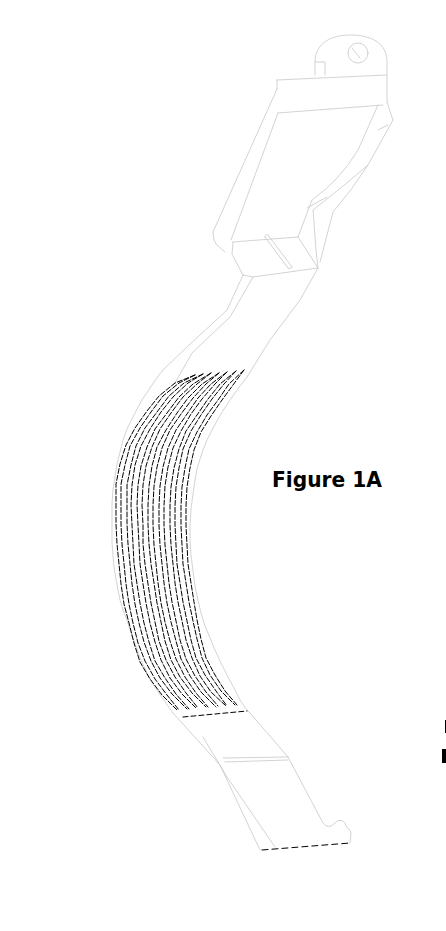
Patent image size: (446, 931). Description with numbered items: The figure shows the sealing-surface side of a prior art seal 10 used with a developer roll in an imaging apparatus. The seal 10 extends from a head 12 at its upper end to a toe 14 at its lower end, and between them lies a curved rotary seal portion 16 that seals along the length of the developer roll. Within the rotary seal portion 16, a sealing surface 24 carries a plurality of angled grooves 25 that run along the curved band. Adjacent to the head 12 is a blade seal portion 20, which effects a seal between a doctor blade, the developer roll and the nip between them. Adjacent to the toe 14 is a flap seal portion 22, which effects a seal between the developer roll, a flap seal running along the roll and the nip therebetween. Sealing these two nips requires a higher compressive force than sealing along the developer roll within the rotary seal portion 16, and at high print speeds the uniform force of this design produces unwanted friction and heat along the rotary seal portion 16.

The seal 10 is at (100, 125).
The head 12 is at (377, 158).
The toe 14 is at (311, 784).
The rotary seal portion 16 is at (82, 392).
The blade seal portion 20 is at (325, 280).
The flap seal portion 22 is at (253, 668).
The sealing surface 24 is at (195, 613).
The angled grooves 25 is at (157, 538).